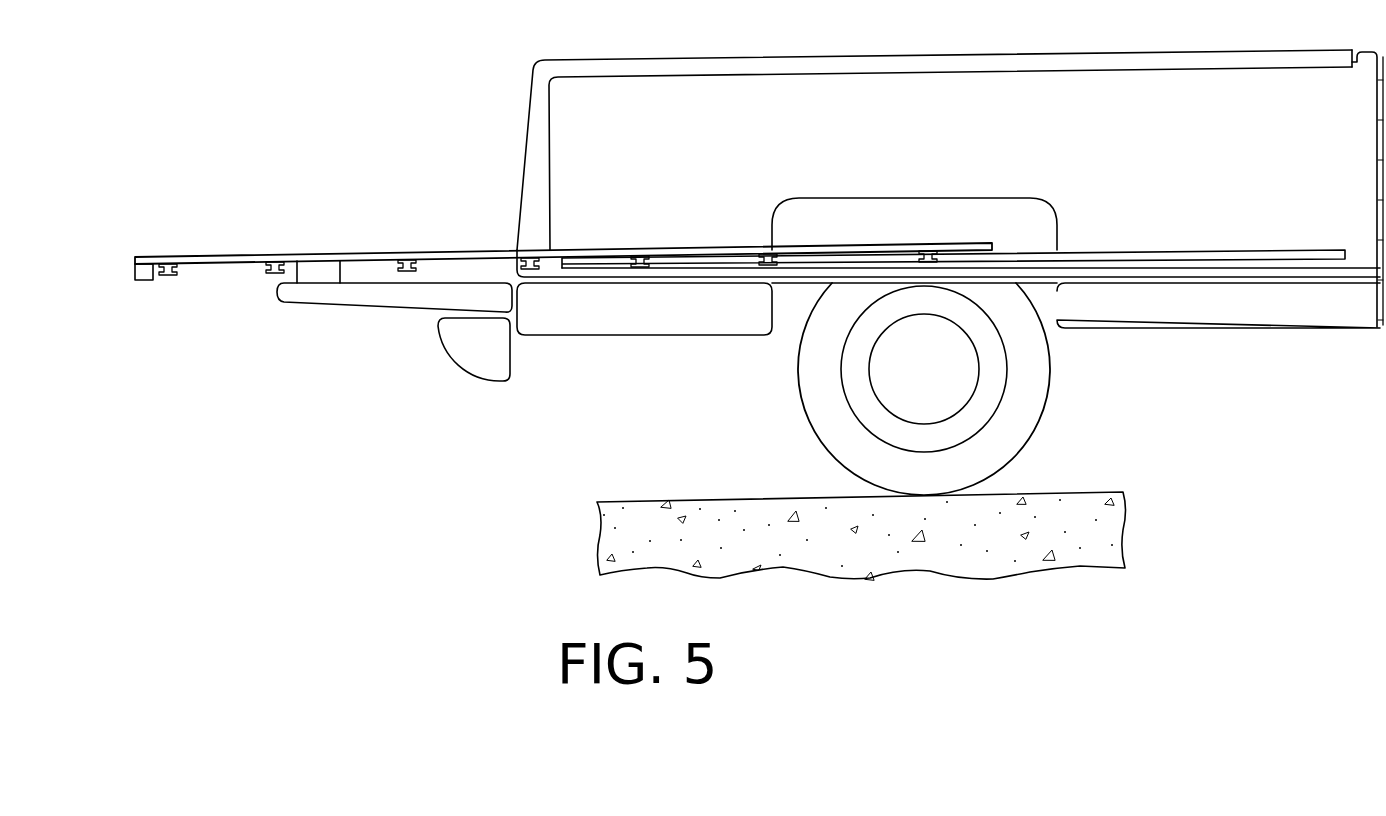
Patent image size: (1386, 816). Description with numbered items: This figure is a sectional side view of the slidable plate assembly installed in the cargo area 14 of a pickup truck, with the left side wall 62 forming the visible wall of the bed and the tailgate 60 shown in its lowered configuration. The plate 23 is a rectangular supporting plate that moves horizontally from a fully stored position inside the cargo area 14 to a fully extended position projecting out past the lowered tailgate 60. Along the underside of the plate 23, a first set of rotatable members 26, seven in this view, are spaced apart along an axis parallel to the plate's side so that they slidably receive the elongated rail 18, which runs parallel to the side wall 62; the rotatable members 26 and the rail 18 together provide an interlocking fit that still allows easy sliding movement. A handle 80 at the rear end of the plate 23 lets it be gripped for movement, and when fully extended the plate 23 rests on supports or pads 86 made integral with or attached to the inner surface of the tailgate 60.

The cargo area 14 is at (843, 96).
The elongated rail 18 is at (1220, 265).
The plate 23 is at (216, 240).
The first set of rotatable members 26 is at (187, 291).
The tailgate 60 is at (385, 297).
The left side wall 62 is at (972, 95).
The handle 80 is at (143, 282).
The supports or pads 86 is at (312, 277).